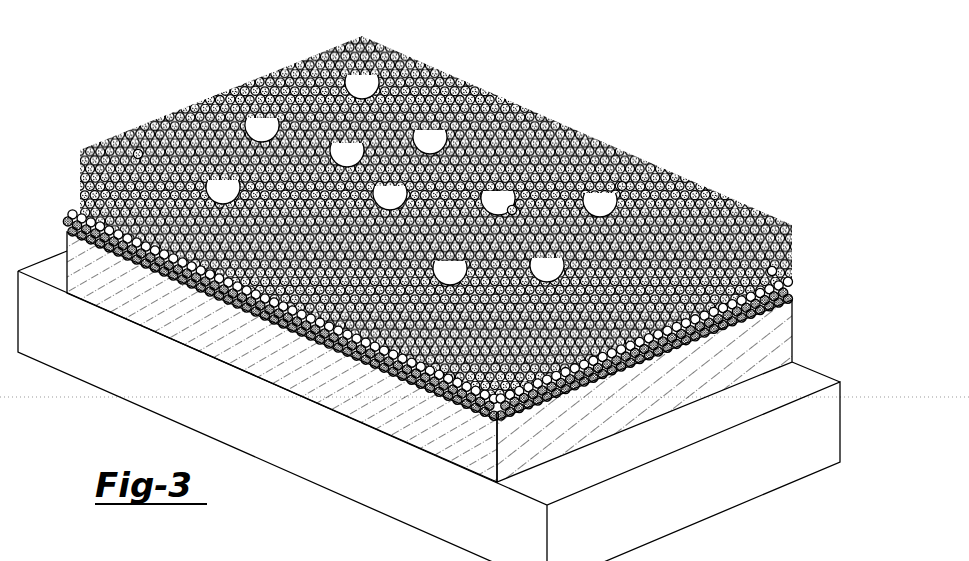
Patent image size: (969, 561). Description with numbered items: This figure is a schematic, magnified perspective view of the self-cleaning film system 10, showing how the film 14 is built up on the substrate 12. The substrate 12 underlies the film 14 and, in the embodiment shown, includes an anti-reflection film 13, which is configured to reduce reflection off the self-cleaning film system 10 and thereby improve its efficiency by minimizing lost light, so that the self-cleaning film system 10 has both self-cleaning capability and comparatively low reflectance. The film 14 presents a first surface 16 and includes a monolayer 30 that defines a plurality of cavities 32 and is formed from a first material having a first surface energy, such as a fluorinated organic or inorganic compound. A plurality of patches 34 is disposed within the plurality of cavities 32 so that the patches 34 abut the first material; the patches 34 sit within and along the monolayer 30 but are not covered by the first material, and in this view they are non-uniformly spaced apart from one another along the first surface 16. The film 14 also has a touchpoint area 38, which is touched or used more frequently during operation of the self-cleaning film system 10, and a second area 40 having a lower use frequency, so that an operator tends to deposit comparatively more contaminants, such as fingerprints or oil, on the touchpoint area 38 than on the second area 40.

The self-cleaning film system 10 is at (484, 287).
The substrate 12 is at (484, 396).
The anti-reflection film 13 is at (882, 460).
The film 14 is at (778, 268).
The first surface 16 is at (135, 148).
The monolayer 30 is at (462, 230).
The cavities 32 is at (517, 205).
The patches 34 is at (345, 145).
The touchpoint area 38 is at (627, 182).
The second area 40 is at (784, 230).